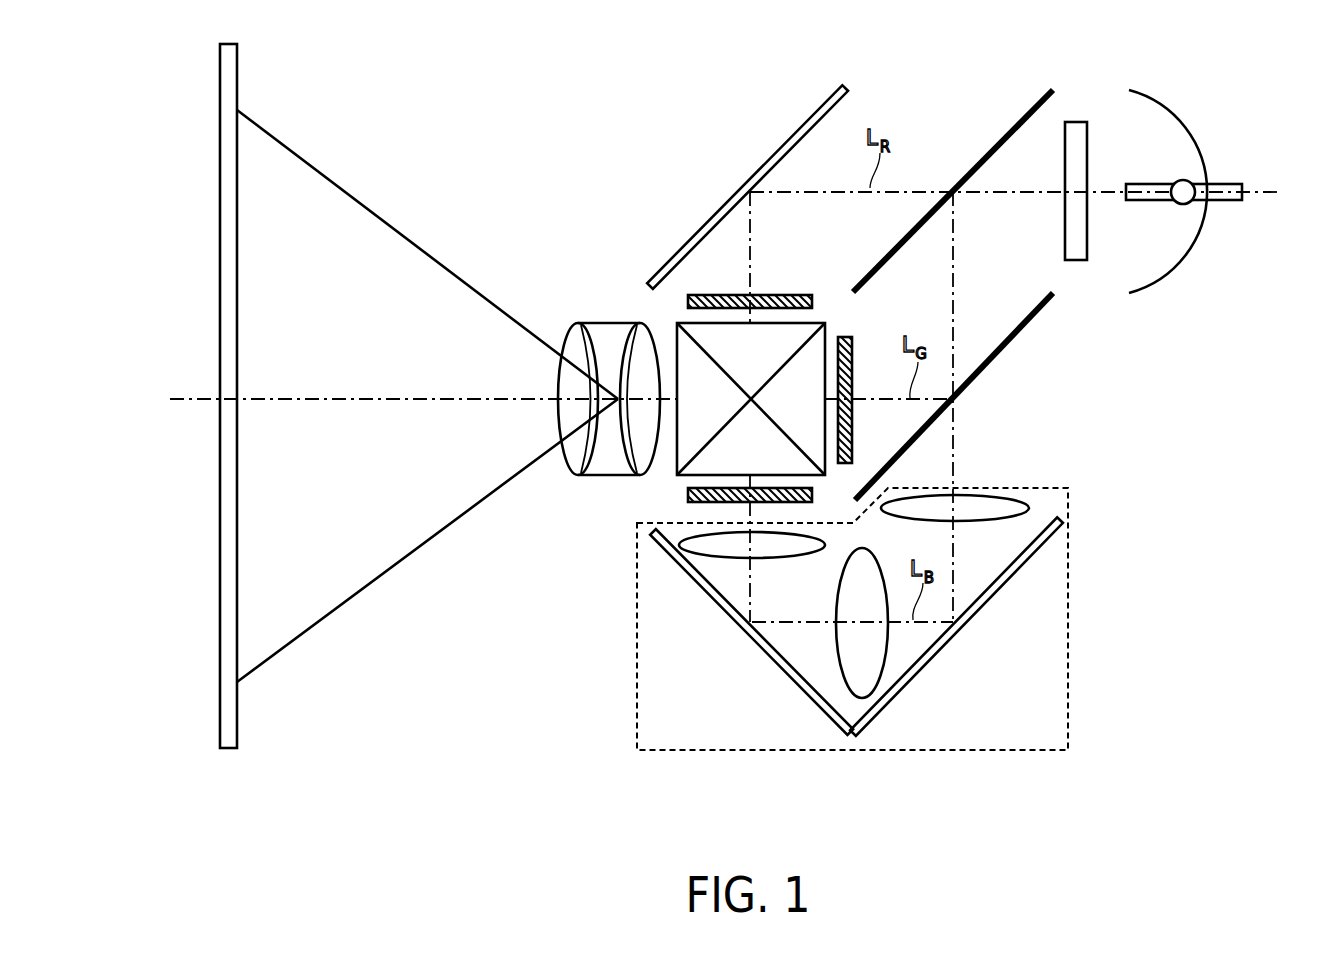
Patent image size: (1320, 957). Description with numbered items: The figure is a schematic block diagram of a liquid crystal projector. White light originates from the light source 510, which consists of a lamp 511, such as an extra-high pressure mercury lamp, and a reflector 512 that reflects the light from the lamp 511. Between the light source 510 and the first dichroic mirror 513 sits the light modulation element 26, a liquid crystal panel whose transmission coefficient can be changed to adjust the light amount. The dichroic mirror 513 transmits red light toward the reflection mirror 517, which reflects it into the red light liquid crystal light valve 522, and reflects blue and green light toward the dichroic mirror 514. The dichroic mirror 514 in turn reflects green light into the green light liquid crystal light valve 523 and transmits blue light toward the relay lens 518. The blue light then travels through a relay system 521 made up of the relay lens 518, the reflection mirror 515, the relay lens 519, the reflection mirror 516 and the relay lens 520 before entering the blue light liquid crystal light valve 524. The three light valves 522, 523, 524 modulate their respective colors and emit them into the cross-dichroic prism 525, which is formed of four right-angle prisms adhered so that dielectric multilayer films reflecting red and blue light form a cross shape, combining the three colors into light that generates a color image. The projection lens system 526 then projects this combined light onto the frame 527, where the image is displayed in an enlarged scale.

The light modulation element 26 is at (1073, 260).
The light source 510 is at (1216, 162).
The lamp 511 is at (1190, 177).
The reflector 512 is at (1195, 253).
The dichroic mirror 513 is at (1017, 125).
The dichroic mirror 514 is at (1037, 313).
The reflection mirror 515 is at (1027, 557).
The reflection mirror 516 is at (767, 650).
The reflection mirror 517 is at (792, 140).
The relay lens 518 is at (982, 503).
The relay lens 519 is at (873, 643).
The relay lens 520 is at (720, 550).
The relay system 521 is at (863, 587).
The red light liquid crystal light valve 522 is at (783, 295).
The green light liquid crystal light valve 523 is at (853, 357).
The blue light liquid crystal light valve 524 is at (687, 492).
The cross-dichroic prism 525 is at (687, 448).
The projection lens system 526 is at (660, 321).
The frame 527 is at (230, 748).